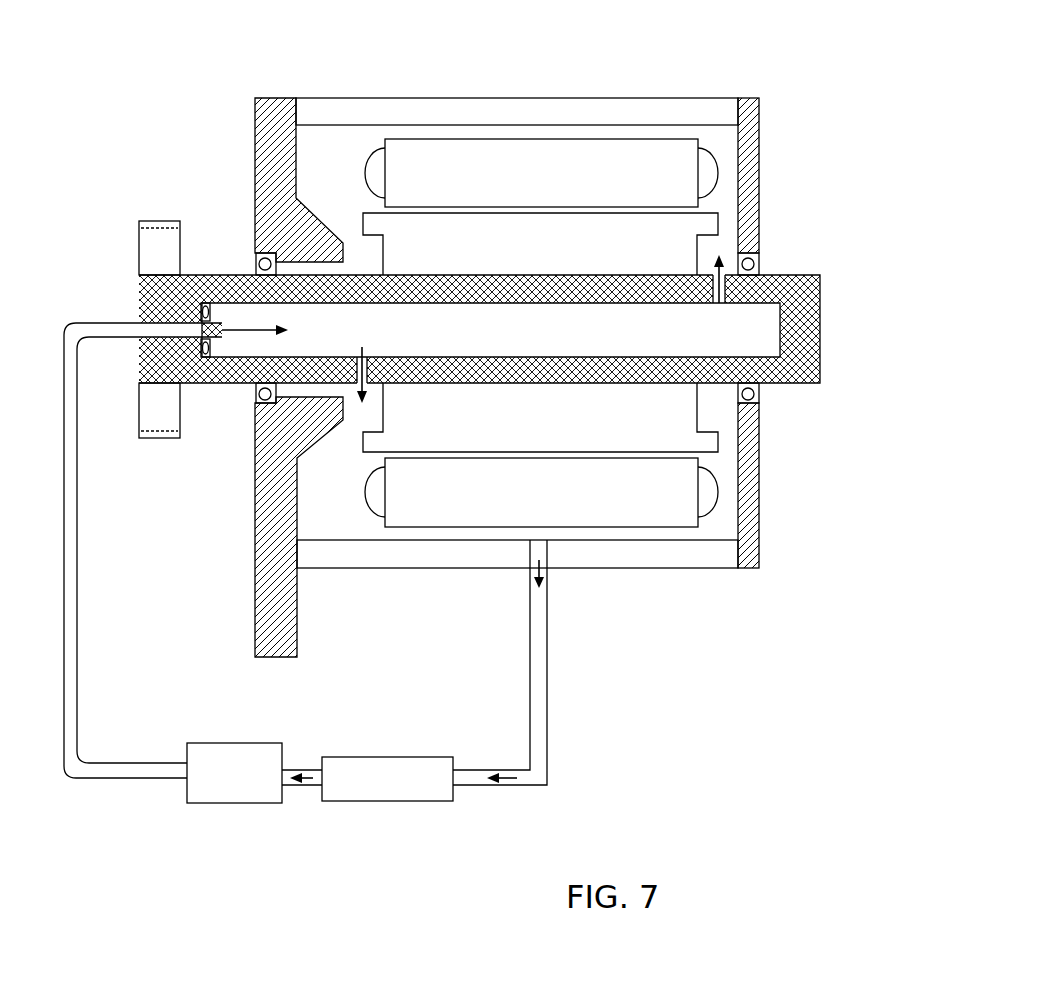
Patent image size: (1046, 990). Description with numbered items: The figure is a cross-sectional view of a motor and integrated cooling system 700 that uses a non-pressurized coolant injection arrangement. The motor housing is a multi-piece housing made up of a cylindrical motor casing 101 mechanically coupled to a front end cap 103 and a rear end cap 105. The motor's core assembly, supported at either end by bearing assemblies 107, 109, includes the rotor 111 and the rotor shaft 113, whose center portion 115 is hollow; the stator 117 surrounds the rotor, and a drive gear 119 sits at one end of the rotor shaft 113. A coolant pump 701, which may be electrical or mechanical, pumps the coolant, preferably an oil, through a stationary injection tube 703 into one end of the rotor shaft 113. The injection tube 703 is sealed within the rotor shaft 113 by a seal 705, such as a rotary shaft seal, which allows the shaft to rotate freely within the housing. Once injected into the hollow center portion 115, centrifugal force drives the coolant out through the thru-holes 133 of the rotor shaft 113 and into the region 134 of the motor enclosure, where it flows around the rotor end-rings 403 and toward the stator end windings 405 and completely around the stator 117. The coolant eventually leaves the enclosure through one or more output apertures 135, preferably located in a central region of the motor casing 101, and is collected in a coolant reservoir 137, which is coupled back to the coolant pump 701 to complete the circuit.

The motor and integrated cooling system 700 is at (226, 52).
The cylindrical motor casing 101 is at (536, 122).
The front end cap 103 is at (268, 152).
The rear end cap 105 is at (755, 138).
The bearing assembly 107 is at (258, 264).
The bearing assembly 109 is at (757, 262).
The rotor 111 is at (536, 249).
The rotor shaft 113 is at (792, 366).
The center portion of rotor shaft 115 is at (536, 337).
The stator 117 is at (536, 179).
The drive gear 119 is at (150, 248).
The thru-holes 133 is at (735, 285).
The region of motor enclosure 134 is at (352, 199).
The output apertures 135 is at (562, 552).
The coolant reservoir 137 is at (372, 801).
The rotor end-rings 403 is at (731, 221).
The stator end windings 405 is at (731, 170).
The coolant pump 701 is at (240, 805).
The injection tube 703 is at (78, 545).
The seal 705 is at (206, 358).